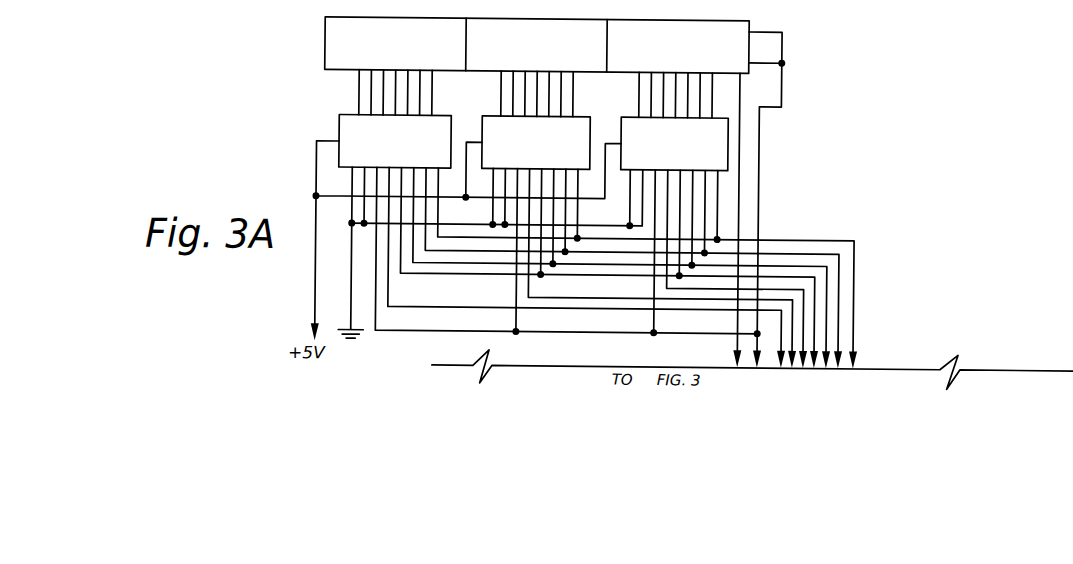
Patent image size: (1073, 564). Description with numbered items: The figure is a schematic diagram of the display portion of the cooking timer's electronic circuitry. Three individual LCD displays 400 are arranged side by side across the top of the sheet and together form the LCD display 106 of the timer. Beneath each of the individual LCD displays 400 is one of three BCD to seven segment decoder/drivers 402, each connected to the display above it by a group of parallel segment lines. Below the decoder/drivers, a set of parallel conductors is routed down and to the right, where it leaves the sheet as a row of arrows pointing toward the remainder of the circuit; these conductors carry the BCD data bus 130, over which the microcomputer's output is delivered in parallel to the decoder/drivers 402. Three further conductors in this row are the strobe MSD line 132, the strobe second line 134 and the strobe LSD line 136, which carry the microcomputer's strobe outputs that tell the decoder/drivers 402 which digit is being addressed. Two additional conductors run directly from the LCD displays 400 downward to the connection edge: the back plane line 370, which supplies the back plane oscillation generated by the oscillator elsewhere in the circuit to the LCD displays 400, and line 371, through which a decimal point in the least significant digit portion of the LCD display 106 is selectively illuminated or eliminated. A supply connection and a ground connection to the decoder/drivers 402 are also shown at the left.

The LCD display 106 is at (301, 66).
The individual LCD displays 400 is at (379, 58).
The BCD to seven segment decoder/drivers 402 is at (380, 153).
The BCD data bus 130 is at (859, 369).
The strobe MSD line 132 is at (783, 320).
The strobe second line 134 is at (793, 328).
The strobe LSD line 136 is at (804, 336).
The back plane line 370 is at (756, 337).
The decimal point line 371 is at (737, 319).